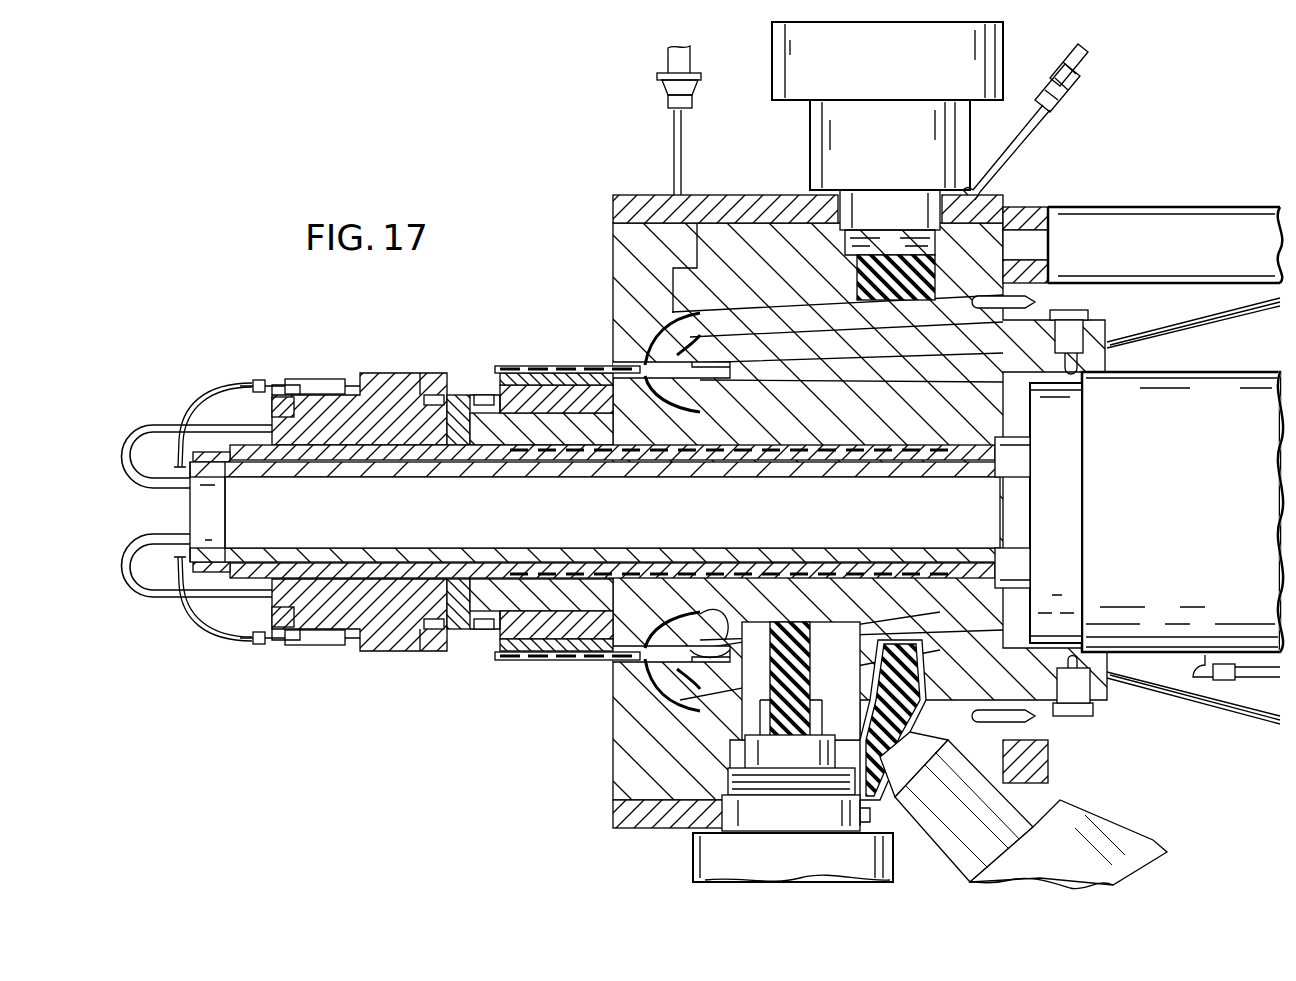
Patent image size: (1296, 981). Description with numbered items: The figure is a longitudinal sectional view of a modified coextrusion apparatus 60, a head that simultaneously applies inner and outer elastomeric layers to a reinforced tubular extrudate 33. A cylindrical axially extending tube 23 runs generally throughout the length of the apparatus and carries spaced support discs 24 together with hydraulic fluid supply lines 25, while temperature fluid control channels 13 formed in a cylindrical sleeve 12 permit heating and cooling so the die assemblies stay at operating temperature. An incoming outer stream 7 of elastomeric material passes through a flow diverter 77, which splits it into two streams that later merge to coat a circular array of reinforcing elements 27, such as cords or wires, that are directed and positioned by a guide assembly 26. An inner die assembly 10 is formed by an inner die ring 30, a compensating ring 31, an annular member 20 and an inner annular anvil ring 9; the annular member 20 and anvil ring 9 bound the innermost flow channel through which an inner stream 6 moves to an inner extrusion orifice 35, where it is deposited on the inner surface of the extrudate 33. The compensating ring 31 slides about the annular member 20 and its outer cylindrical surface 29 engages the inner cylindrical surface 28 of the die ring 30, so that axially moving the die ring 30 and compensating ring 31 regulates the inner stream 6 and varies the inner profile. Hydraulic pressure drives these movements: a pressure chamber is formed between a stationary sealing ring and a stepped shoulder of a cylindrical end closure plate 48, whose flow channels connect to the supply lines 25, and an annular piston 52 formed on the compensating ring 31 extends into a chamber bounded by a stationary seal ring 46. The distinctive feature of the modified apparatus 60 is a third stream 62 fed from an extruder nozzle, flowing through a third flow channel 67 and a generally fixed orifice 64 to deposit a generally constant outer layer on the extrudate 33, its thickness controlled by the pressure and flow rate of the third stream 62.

The inner stream 6 is at (778, 712).
The outer stream 7 is at (935, 660).
The inner annular anvil ring 9 is at (690, 636).
The inner die assembly 10 is at (607, 680).
The cylindrical sleeve 12 is at (880, 574).
The temperature fluid control channels 13 is at (665, 452).
The annular member 20 is at (565, 430).
The cylindrical axially extending tube 23 is at (1002, 576).
The support discs 24 is at (208, 498).
The hydraulic fluid supply lines 25 is at (140, 588).
The guide assembly 26 is at (1112, 338).
The reinforcing elements 27 is at (1228, 315).
The inner cylindrical surface 28 is at (450, 384).
The outer cylindrical surface 29 is at (470, 382).
The inner die ring 30 is at (410, 374).
The compensating ring 31 is at (540, 395).
The tubular extrudate 33 is at (478, 380).
The inner extrusion orifice 35 is at (680, 398).
The stationary seal ring 46 is at (450, 630).
The cylindrical end closure plate 48 is at (270, 656).
The annular piston 52 is at (535, 640).
The modified apparatus 60 is at (534, 330).
The third stream 62 is at (866, 245).
The fixed orifice 64 is at (630, 332).
The third flow channel 67 is at (925, 268).
The flow diverter 77 is at (908, 648).